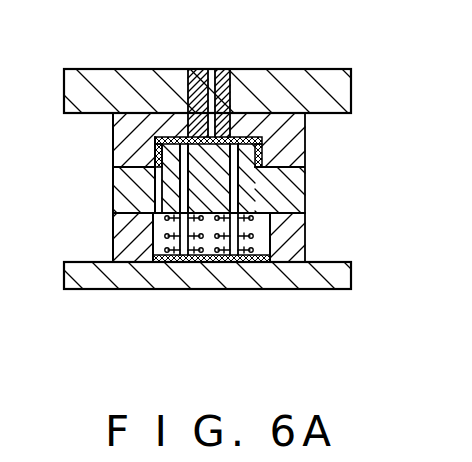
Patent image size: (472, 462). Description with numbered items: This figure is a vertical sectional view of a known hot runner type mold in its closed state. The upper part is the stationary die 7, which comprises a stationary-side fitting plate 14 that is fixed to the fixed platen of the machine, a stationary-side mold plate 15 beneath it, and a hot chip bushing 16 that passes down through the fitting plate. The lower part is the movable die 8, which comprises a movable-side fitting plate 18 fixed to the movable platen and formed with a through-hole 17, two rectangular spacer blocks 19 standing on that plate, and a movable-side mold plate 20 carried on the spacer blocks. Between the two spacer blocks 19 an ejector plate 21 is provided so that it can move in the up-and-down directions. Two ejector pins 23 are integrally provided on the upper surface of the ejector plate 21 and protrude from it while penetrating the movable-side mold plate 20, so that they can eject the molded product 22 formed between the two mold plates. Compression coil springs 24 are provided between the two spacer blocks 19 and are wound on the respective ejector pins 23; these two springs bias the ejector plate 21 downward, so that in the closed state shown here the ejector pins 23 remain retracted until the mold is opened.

The stationary die 7 is at (312, 133).
The movable die 8 is at (314, 233).
The stationary-side fitting plate 14 is at (278, 78).
The stationary-side mold plate 15 is at (123, 143).
The hot chip bushing 16 is at (191, 68).
The through-hole 17 is at (232, 262).
The movable-side fitting plate 18 is at (98, 276).
The spacer blocks 19 is at (122, 238).
The movable-side mold plate 20 is at (122, 188).
The ejector plate 21 is at (252, 262).
The molded product 22 is at (173, 137).
The ejector pins 23 is at (233, 187).
The compression coil springs 24 is at (255, 236).